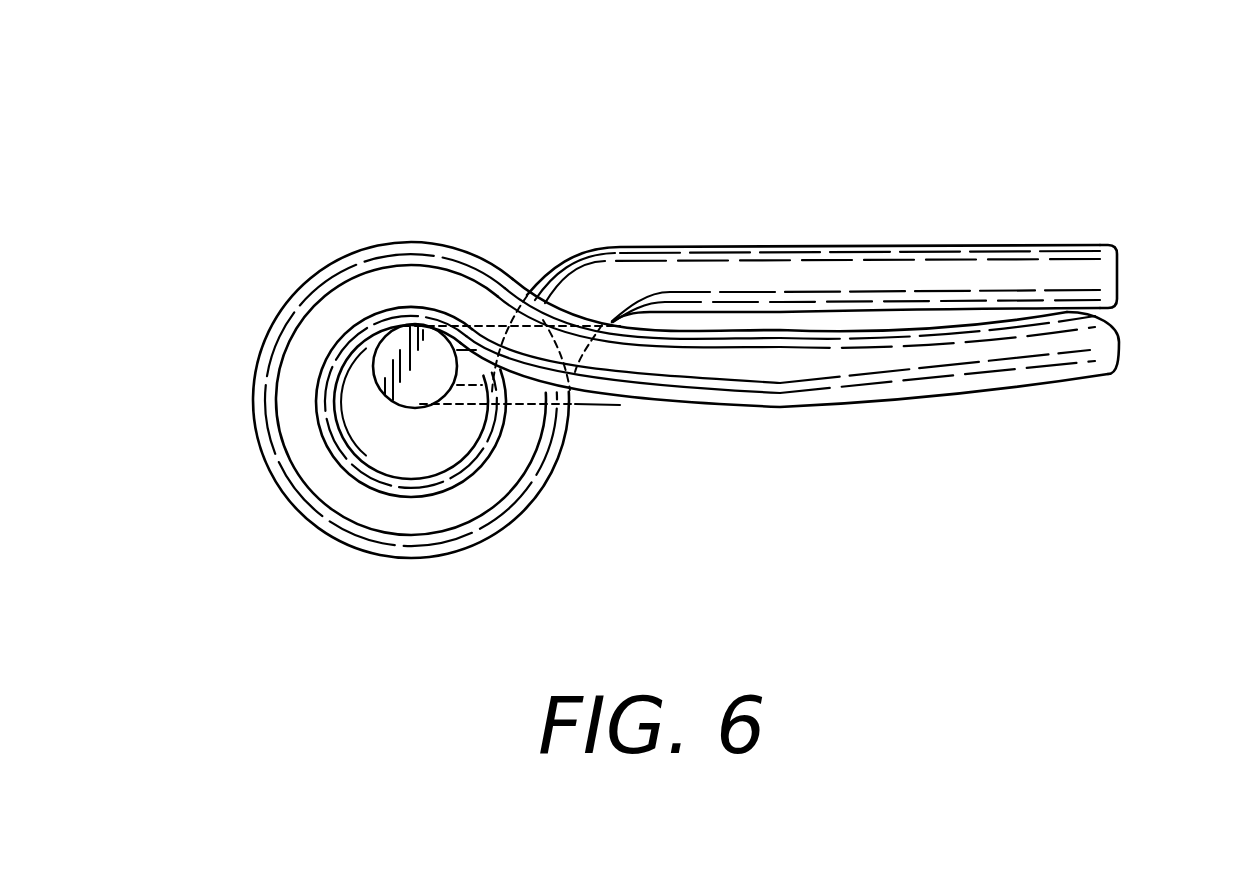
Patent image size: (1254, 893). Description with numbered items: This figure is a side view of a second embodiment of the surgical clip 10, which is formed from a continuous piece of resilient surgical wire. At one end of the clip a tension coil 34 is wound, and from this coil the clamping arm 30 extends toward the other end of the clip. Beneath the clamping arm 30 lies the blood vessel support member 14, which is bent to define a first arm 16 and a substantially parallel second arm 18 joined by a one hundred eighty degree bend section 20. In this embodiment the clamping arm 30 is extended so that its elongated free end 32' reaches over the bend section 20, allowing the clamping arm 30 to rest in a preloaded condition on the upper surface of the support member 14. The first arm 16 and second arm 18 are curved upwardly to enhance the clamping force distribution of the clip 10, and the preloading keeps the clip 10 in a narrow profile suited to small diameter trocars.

The surgical clip 10 is at (699, 301).
The blood vessel support member 14 is at (851, 400).
The first arm 16 is at (570, 397).
The second arm 18 is at (933, 400).
The bend section 20 is at (1100, 368).
The clamping arm 30 is at (873, 238).
The elongated free end 32' is at (1159, 270).
The tension coil 34 is at (292, 477).